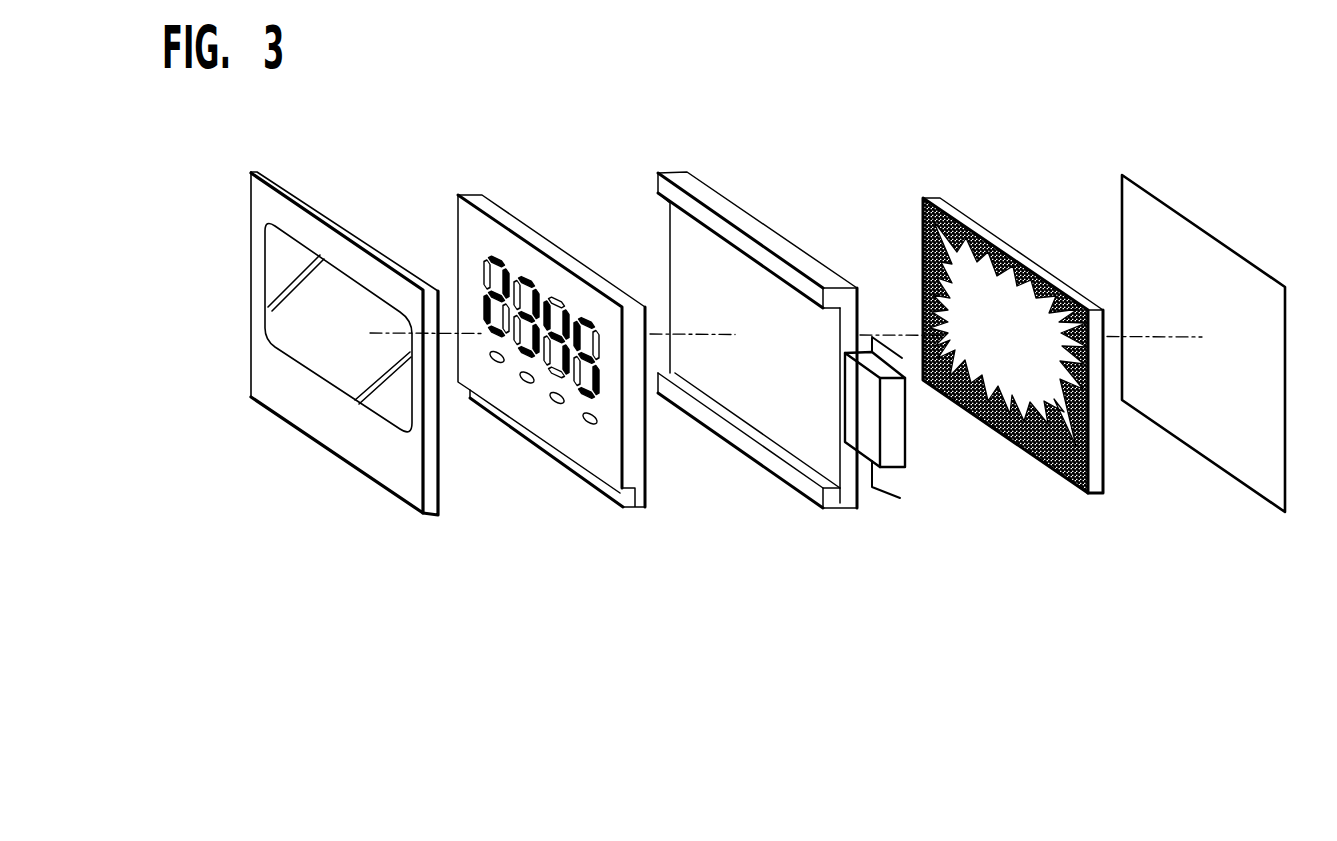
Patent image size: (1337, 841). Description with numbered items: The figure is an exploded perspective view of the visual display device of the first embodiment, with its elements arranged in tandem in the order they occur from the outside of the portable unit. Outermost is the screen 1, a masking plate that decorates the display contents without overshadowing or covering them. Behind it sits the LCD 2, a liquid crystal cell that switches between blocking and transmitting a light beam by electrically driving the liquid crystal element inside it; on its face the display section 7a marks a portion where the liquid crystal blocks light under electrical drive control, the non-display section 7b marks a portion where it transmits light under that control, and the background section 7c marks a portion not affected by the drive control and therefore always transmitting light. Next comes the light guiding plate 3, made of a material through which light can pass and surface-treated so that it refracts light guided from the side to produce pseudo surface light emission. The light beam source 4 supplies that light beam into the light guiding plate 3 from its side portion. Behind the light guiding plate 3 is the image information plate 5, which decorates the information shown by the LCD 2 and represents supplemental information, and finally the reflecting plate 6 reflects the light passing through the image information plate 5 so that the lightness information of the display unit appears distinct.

The screen 1 is at (320, 437).
The LCD 2 is at (510, 412).
The light guiding plate 3 is at (730, 440).
The light beam source 4 is at (907, 442).
The image information plate 5 is at (1053, 472).
The reflecting plate 6 is at (1195, 453).
The display section 7a is at (492, 256).
The non-display section 7b is at (554, 297).
The background section 7c is at (575, 412).